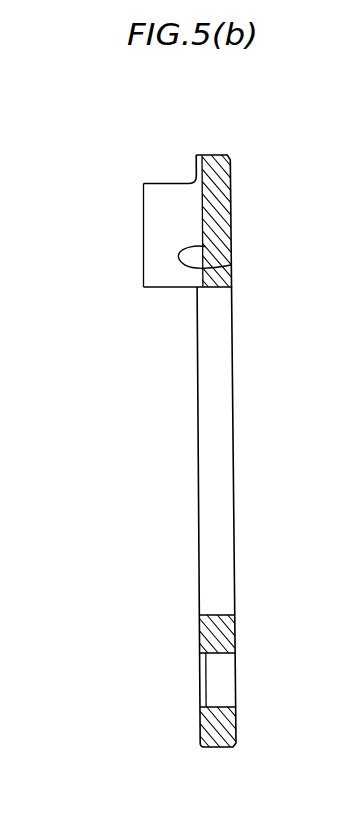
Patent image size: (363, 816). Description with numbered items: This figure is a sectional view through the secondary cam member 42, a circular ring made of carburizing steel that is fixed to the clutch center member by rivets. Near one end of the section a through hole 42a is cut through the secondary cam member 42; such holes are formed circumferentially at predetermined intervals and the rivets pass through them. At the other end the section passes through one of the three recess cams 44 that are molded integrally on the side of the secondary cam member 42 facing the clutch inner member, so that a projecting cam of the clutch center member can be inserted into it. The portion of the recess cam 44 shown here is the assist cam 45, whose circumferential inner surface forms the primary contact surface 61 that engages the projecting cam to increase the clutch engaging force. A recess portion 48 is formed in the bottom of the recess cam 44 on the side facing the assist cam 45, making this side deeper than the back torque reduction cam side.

The secondary cam member 42 is at (218, 222).
The through hole 42a is at (217, 706).
The recess cam 44 is at (144, 184).
The assist cam 45 is at (144, 233).
The primary contact surface 61 is at (162, 250).
The recess portion 48 is at (231, 265).